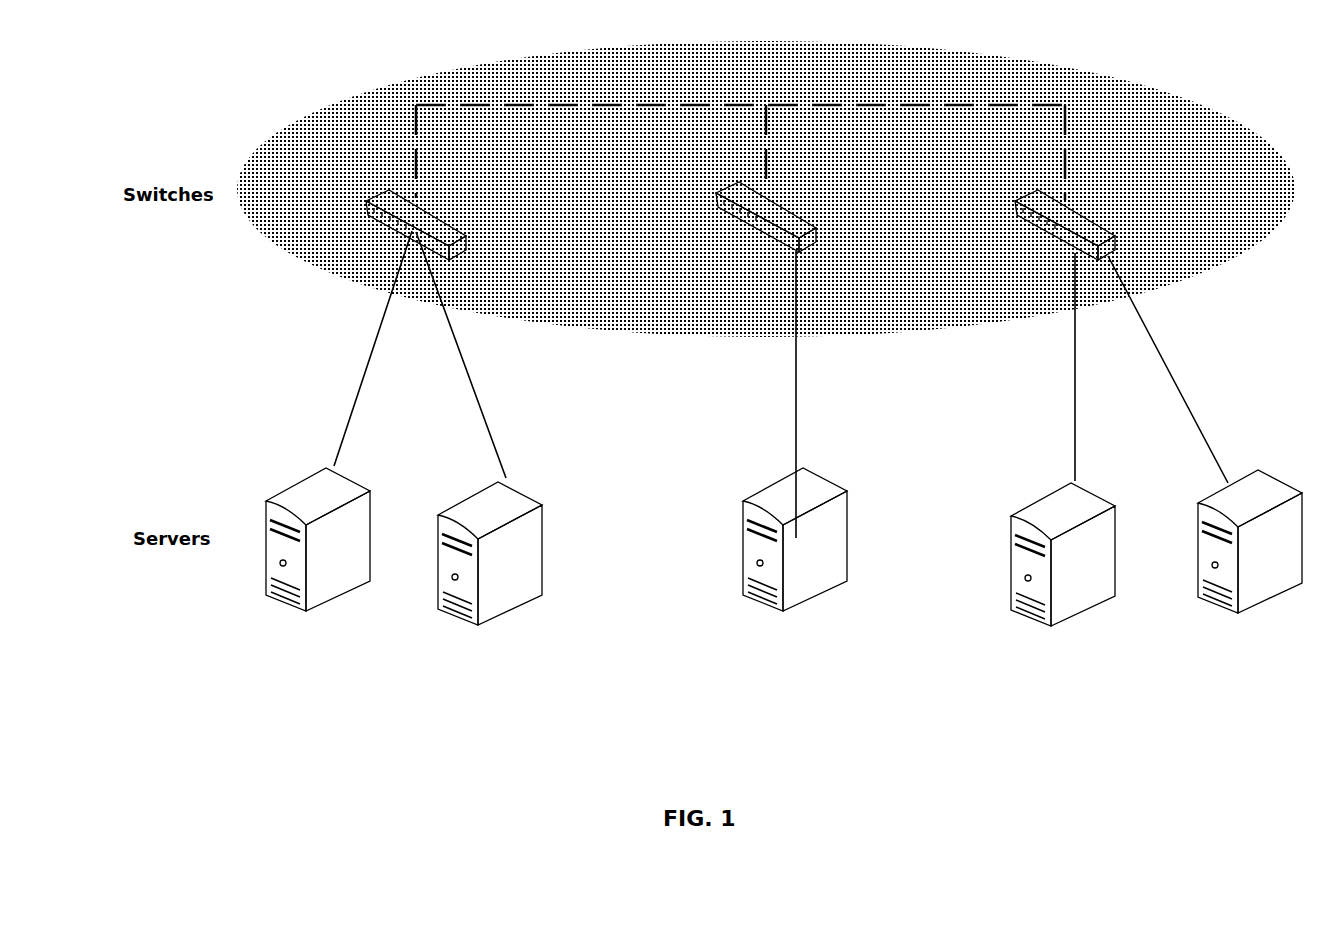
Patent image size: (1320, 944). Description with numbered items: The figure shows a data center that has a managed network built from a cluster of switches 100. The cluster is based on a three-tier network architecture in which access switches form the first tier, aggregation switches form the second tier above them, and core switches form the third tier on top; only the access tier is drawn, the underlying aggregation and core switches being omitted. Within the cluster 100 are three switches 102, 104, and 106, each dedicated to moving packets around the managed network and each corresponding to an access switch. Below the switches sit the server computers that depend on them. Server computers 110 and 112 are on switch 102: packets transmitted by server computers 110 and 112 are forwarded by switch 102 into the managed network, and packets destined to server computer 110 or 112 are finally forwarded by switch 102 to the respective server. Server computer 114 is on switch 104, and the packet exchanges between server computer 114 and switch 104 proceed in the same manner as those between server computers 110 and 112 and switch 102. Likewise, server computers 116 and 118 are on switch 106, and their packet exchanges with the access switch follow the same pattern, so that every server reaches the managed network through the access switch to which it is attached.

The cluster of switches 100 is at (355, 85).
The switch 102 is at (437, 217).
The switch 104 is at (787, 210).
The switch 106 is at (1080, 212).
The server computer 110 is at (298, 603).
The server computer 112 is at (470, 618).
The server computer 114 is at (775, 603).
The server computer 116 is at (1043, 618).
The server computer 118 is at (1230, 605).